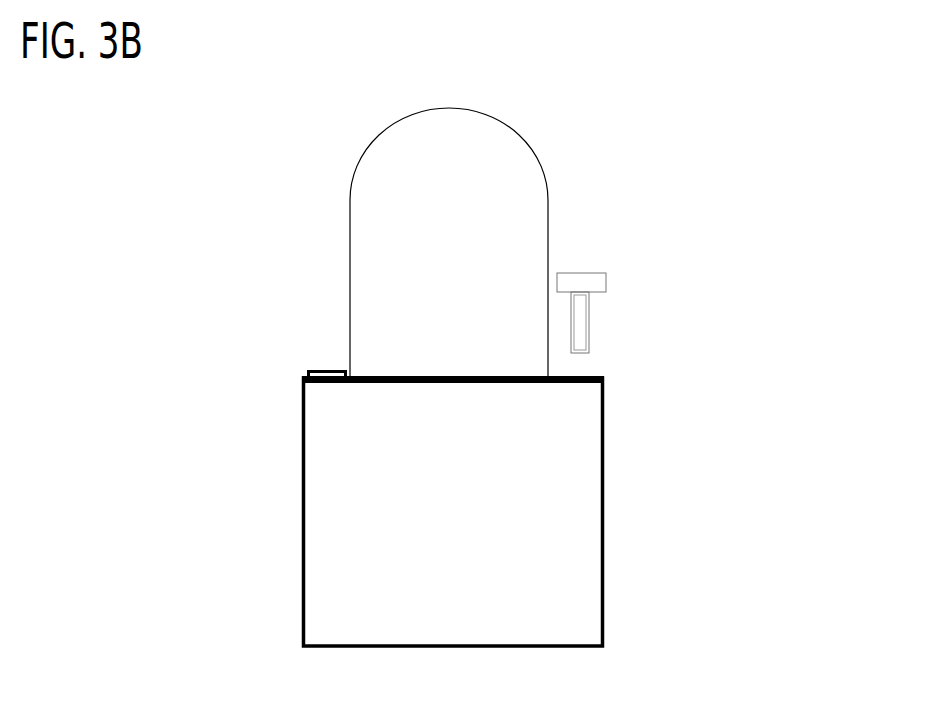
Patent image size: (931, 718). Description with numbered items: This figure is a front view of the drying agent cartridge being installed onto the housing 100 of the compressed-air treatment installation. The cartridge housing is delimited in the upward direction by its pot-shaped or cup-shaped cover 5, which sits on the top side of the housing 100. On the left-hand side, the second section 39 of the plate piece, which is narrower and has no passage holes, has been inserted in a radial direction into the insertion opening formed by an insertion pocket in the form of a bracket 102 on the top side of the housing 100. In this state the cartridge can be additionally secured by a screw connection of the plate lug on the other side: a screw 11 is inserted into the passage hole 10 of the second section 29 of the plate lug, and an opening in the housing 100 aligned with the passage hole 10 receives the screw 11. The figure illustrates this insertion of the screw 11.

The cover 5 is at (498, 155).
The passage hole 10 is at (578, 376).
The screw 11 is at (580, 318).
The second section of the plate lug 29 is at (555, 376).
The second section of the plate piece 39 is at (307, 377).
The housing of the compressed-air treatment installation 100 is at (347, 553).
The bracket 102 is at (325, 372).